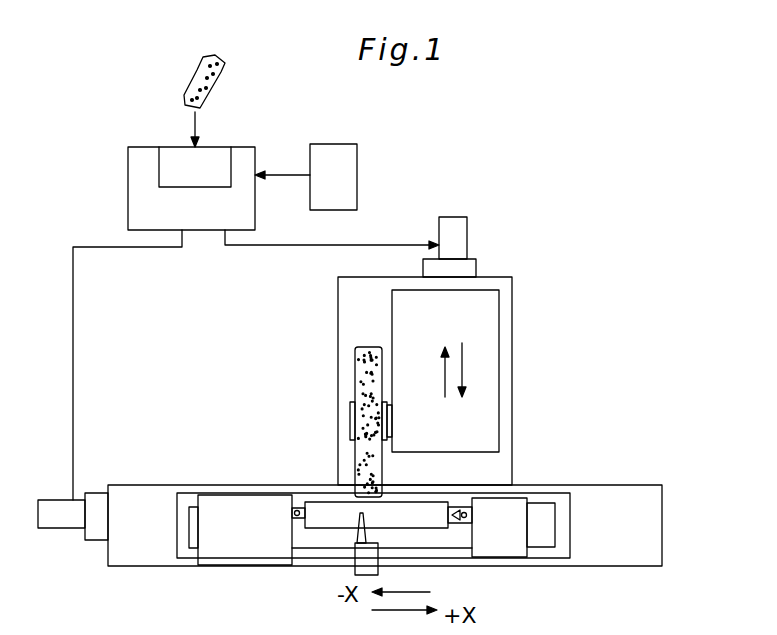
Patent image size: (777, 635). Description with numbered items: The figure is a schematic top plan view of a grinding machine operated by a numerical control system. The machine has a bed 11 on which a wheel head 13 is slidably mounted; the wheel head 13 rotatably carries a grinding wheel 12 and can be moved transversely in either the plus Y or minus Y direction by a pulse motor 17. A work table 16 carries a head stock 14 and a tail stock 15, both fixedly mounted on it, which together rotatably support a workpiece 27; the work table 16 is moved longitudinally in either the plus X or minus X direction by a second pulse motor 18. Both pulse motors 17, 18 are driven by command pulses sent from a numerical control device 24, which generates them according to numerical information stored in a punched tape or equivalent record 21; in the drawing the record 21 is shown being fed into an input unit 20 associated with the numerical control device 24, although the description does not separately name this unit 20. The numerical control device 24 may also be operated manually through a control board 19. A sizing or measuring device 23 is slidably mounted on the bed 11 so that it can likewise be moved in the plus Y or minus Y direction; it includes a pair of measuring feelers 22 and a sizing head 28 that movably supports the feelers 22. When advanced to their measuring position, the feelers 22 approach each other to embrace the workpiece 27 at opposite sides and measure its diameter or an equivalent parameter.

The bed 11 is at (502, 475).
The grinding wheel 12 is at (362, 365).
The wheel head 13 is at (493, 387).
The head stock 14 is at (237, 557).
The tail stock 15 is at (518, 547).
The work table 16 is at (542, 507).
The pulse motor 17 is at (458, 245).
The pulse motor 18 is at (67, 522).
The control board 19 is at (348, 173).
The computer 20 is at (218, 158).
The punched tape or equivalent record 21 is at (220, 72).
The measuring feelers 22 is at (360, 535).
The sizing device 23 is at (346, 573).
The numerical control device 24 is at (240, 222).
The workpiece 27 is at (335, 505).
The sizing head 28 is at (369, 565).